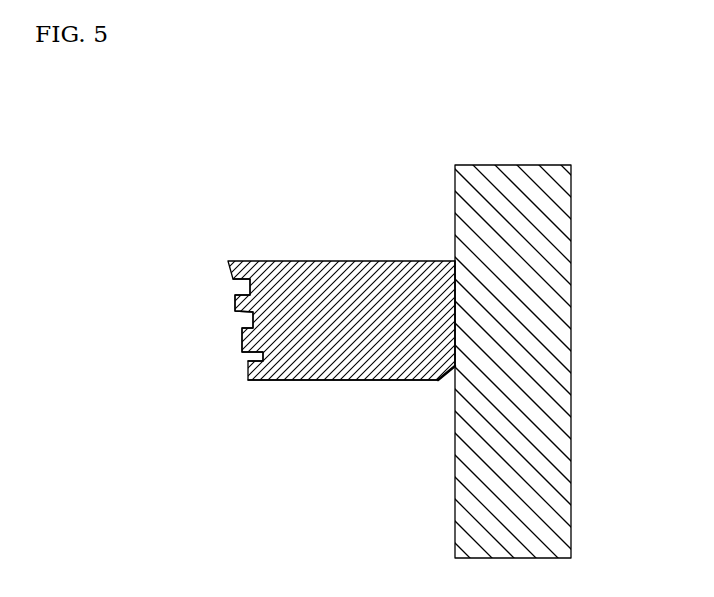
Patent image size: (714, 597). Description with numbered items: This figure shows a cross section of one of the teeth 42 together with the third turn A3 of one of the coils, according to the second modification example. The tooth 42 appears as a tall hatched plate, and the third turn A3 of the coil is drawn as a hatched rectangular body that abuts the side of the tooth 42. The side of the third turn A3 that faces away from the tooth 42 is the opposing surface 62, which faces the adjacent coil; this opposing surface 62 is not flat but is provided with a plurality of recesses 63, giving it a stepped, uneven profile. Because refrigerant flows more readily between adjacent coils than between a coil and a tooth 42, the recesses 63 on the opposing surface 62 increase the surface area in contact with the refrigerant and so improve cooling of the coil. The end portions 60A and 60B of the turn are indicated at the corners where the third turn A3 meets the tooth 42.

The opposing surface 62 is at (220, 255).
The recesses 63 is at (252, 322).
The tooth 42 is at (555, 322).
The lower end portion 60A is at (450, 378).
The upper end portion 60B is at (443, 265).
The third turn A3 is at (282, 393).